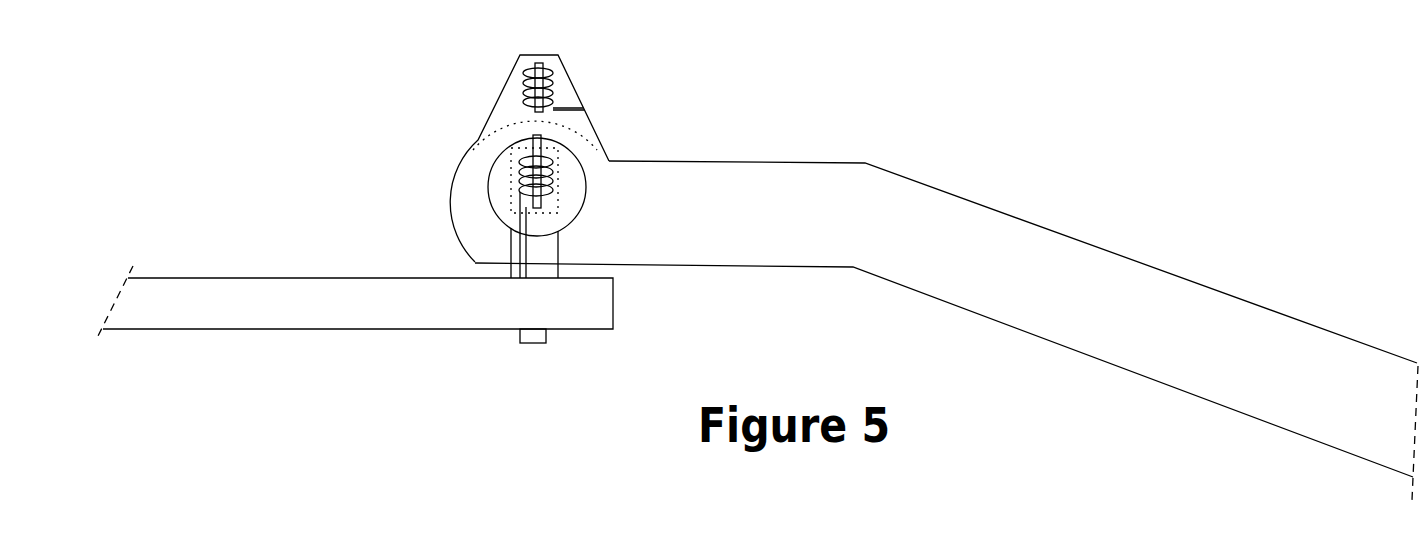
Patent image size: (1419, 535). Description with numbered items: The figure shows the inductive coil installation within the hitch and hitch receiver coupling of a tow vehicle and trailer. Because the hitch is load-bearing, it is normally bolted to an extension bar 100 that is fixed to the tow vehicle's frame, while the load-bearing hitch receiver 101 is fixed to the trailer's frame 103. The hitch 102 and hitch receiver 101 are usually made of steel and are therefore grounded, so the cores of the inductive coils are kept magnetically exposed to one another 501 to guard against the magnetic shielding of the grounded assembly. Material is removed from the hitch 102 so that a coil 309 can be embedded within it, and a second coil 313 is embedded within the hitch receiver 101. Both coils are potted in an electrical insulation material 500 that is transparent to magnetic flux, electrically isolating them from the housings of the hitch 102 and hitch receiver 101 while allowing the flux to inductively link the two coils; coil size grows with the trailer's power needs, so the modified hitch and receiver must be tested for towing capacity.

The extension bar 100 is at (260, 276).
The hitch receiver 101 is at (452, 207).
The hitch 102 is at (492, 210).
The trailer's frame 103 is at (1130, 258).
The coil 309 is at (553, 172).
The coil 313 is at (555, 82).
The electrical insulation material 500 is at (512, 190).
The magnetically exposed coil cores 501 is at (541, 136).